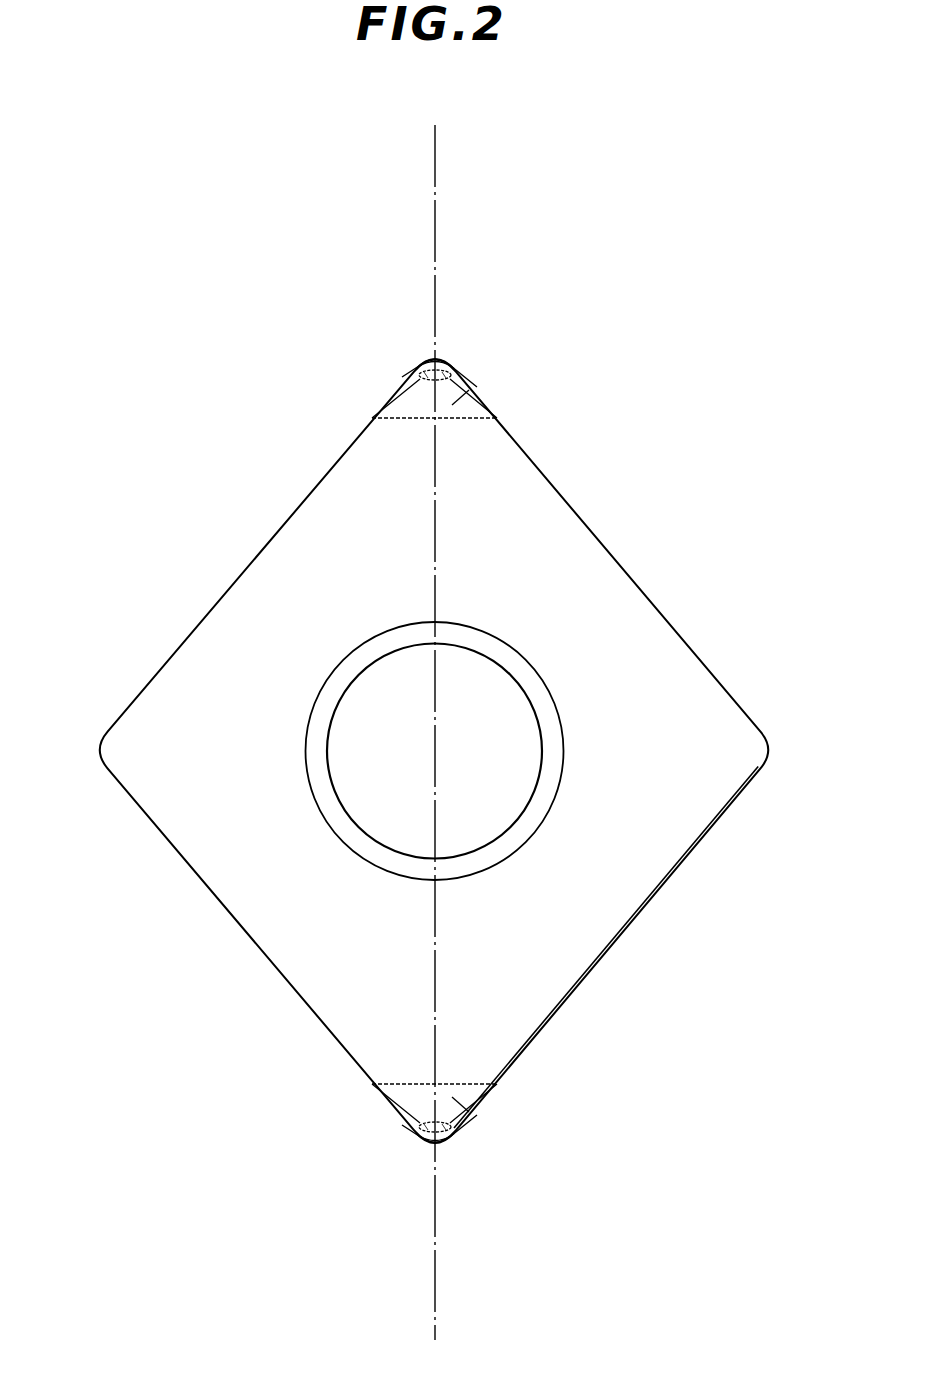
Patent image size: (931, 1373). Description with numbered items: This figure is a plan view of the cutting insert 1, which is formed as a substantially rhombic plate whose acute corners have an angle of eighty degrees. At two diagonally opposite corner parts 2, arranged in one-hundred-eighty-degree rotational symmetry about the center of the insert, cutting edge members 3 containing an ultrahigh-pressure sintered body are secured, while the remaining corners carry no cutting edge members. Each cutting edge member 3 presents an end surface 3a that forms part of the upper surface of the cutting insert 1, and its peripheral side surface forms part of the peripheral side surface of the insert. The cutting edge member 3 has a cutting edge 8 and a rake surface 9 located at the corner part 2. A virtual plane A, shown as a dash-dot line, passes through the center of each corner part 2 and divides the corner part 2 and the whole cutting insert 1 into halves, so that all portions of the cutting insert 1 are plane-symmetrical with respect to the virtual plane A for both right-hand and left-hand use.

The cutting insert 1 is at (503, 560).
The corner part 2 is at (424, 363).
The cutting edge member 3 is at (410, 408).
The end surface 3a is at (477, 387).
The cutting edge 8 is at (408, 372).
The rake surface 9 is at (443, 362).
The virtual plane A is at (434, 141).